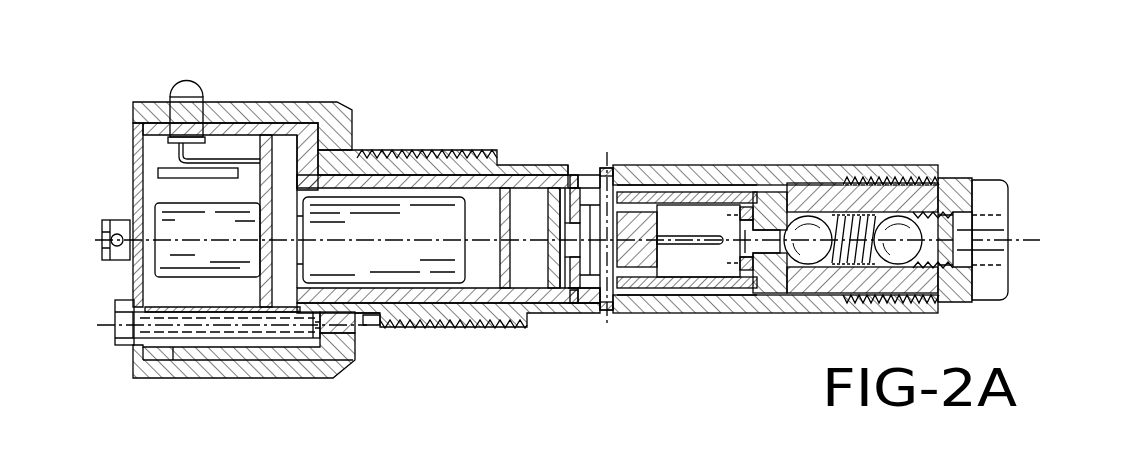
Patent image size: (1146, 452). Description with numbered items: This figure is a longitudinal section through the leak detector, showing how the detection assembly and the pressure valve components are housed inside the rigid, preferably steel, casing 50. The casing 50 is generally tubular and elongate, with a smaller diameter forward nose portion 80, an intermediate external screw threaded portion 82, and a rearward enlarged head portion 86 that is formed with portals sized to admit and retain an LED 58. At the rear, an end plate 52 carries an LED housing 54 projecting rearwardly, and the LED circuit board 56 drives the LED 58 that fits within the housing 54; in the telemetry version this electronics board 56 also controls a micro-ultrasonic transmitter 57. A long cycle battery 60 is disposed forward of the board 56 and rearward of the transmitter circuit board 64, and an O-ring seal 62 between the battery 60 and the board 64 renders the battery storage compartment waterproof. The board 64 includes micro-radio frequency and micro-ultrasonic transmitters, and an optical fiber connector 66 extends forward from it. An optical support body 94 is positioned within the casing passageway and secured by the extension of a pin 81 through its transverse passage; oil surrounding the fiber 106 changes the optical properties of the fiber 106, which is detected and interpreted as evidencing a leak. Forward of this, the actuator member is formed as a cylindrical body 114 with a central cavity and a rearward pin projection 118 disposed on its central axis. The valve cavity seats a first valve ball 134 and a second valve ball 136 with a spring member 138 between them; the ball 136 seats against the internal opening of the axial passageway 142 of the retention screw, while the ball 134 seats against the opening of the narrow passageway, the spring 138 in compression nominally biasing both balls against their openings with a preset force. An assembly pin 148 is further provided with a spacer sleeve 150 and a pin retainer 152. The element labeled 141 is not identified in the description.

The casing 50 is at (352, 105).
The end plate 52 is at (133, 160).
The LED housing 54 is at (110, 224).
The LED circuit board 56 is at (290, 179).
The micro-ultrasonic transmitter 57 is at (178, 257).
The LED 58 is at (183, 92).
The long cycle battery 60 is at (425, 222).
The O-ring seal 62 is at (507, 222).
The transmitter circuit board 64 is at (551, 258).
The optical fiber connector 66 is at (577, 230).
The forward nose portion 80 is at (766, 163).
The pin 81 is at (610, 270).
The external screw threaded portion 82 is at (436, 152).
The rearward enlarged head portion 86 is at (277, 108).
The optical support body 94 is at (653, 257).
The fiber 106 is at (703, 232).
The cylindrical body 114 is at (700, 282).
The pin projection 118 is at (768, 247).
The first valve ball 134 is at (808, 230).
The second valve ball 136 is at (898, 228).
The spring member 138 is at (858, 225).
The fitting 141 is at (993, 197).
The axial passageway 142 is at (1002, 253).
The assembly pin 148 is at (120, 343).
The spacer sleeve 150 is at (272, 340).
The pin retainer 152 is at (333, 330).